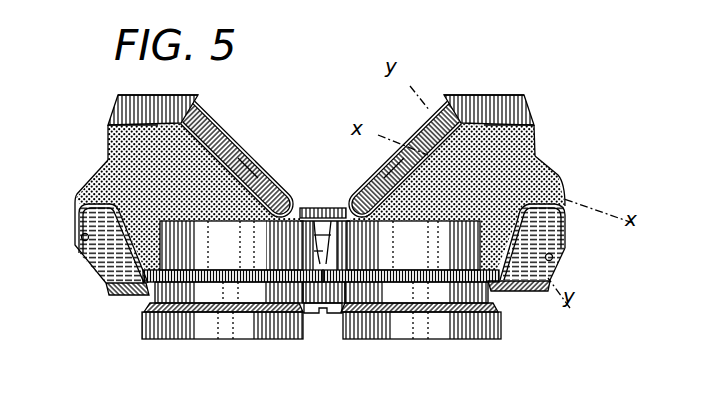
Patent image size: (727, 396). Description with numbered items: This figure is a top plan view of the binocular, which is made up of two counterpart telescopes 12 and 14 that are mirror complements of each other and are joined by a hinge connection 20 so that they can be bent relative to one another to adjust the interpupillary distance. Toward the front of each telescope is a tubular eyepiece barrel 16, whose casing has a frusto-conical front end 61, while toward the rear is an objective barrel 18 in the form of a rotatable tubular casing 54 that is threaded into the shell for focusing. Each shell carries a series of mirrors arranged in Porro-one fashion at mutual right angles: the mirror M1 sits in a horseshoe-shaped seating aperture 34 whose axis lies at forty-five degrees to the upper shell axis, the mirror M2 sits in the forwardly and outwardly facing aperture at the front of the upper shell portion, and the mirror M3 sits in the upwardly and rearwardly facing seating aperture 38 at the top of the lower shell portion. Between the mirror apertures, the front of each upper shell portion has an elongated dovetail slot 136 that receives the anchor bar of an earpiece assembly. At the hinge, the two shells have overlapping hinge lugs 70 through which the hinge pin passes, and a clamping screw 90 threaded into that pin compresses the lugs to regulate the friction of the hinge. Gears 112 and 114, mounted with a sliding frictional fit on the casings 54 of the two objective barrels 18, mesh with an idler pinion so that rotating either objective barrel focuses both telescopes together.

The telescope 12 is at (410, 243).
The telescope 14 is at (218, 244).
The eyepiece barrel 16 is at (100, 137).
The objective barrel 18 is at (134, 318).
The hinge connection 20 is at (324, 186).
The mirror-seating aperture 34 is at (214, 129).
The mirror-seating aperture 38 is at (73, 230).
The tubular casing 54 is at (210, 287).
The frusto-conical front end 61 is at (191, 89).
The hinge lug 70 is at (313, 235).
The clamping screw 90 is at (316, 303).
The gear 112 is at (428, 268).
The gear 114 is at (263, 270).
The dovetail slot 136 is at (152, 117).
The mirror M1 is at (240, 150).
The mirror M2 is at (565, 145).
The mirror M3 is at (562, 243).